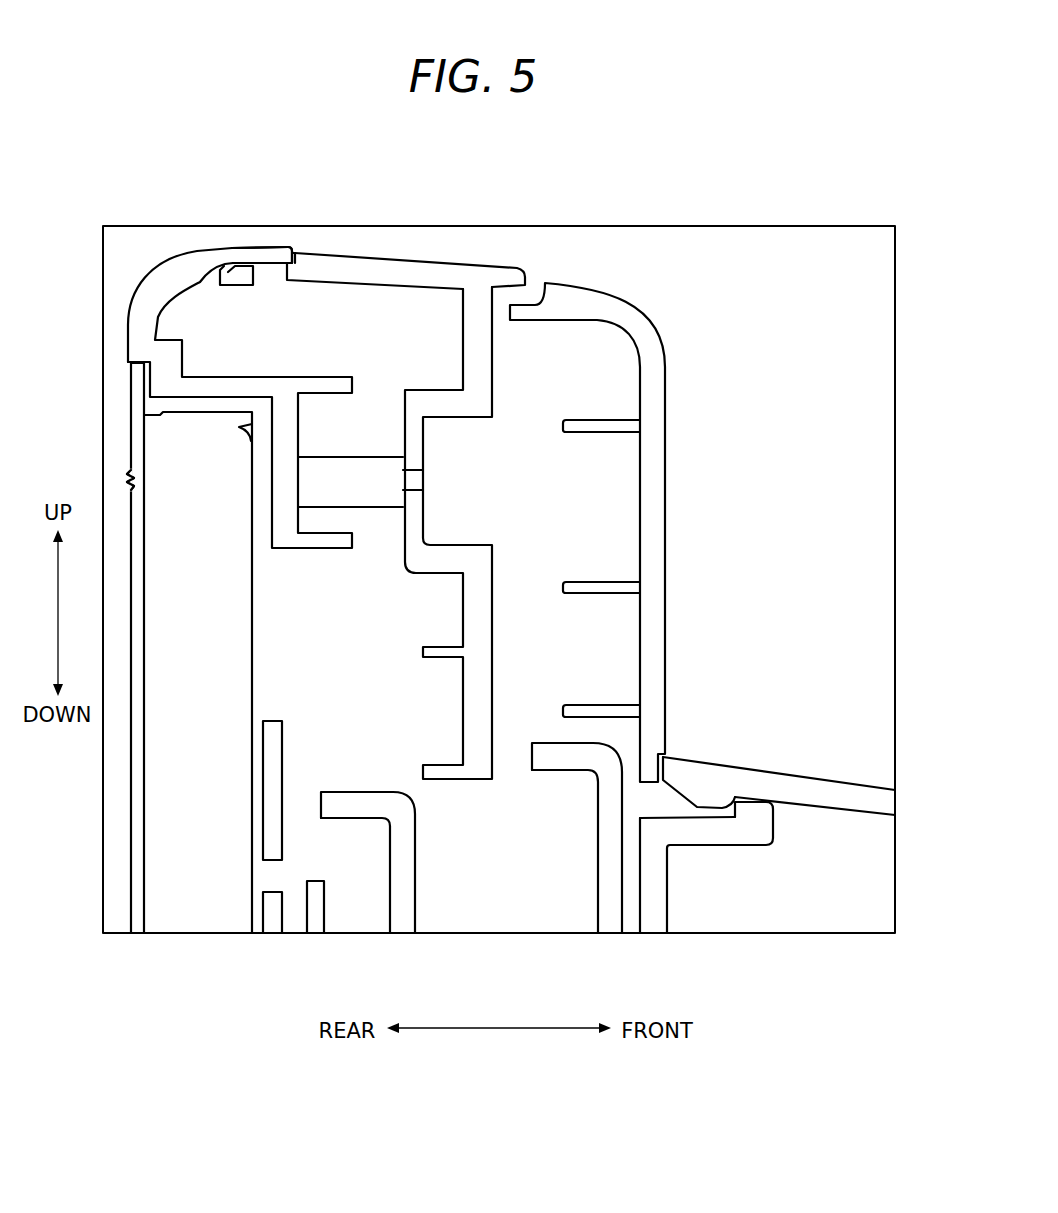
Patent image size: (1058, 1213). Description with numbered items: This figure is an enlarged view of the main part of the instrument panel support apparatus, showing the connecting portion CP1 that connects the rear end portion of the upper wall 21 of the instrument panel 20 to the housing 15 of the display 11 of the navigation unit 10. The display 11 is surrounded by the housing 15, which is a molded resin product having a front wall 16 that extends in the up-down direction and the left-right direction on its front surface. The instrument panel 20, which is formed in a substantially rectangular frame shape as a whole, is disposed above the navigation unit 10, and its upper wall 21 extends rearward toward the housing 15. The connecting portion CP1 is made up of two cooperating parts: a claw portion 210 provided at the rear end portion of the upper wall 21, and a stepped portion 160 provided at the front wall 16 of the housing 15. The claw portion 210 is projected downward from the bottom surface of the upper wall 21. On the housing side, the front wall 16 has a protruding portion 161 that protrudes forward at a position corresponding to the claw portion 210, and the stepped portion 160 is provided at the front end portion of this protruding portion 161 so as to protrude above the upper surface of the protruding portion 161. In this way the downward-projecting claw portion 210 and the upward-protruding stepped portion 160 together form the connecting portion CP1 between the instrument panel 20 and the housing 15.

The navigation unit 10 is at (546, 250).
The display 11 is at (251, 243).
The housing 15 is at (606, 291).
The front wall 16 is at (690, 865).
The stepped portion 160 is at (758, 823).
The protruding portion 161 is at (712, 848).
The instrument panel 20 is at (799, 762).
The upper wall 21 is at (842, 777).
The claw portion 210 is at (705, 775).
The connecting portion CP1 is at (777, 732).